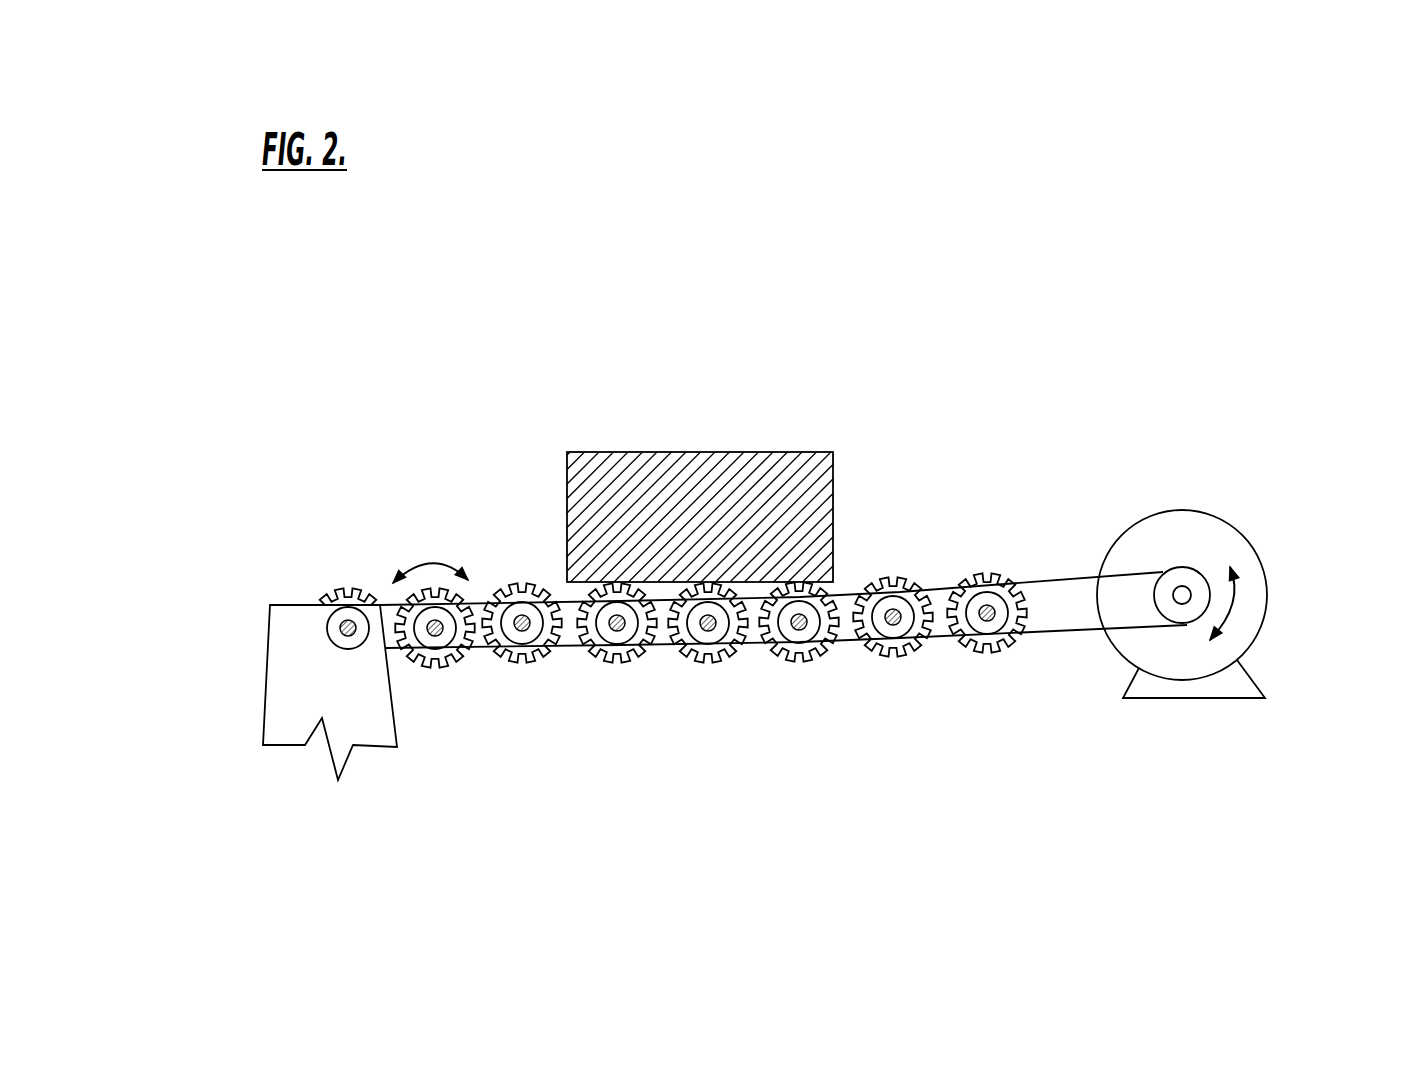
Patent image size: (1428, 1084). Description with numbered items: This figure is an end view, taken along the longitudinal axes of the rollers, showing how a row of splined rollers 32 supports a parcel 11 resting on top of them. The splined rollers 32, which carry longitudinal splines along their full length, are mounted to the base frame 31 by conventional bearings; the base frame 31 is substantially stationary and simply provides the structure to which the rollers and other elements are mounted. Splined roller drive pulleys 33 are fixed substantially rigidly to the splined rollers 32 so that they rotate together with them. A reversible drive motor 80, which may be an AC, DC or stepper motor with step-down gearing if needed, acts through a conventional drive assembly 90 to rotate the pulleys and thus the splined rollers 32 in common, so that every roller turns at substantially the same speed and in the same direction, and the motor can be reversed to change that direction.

The parcel 11 is at (833, 548).
The base frame 31 is at (303, 695).
The splined rollers 32 is at (443, 667).
The splined roller drive pulleys 33 is at (617, 625).
The reversible drive motor 80 is at (1188, 537).
The drive assembly 90 is at (1050, 633).